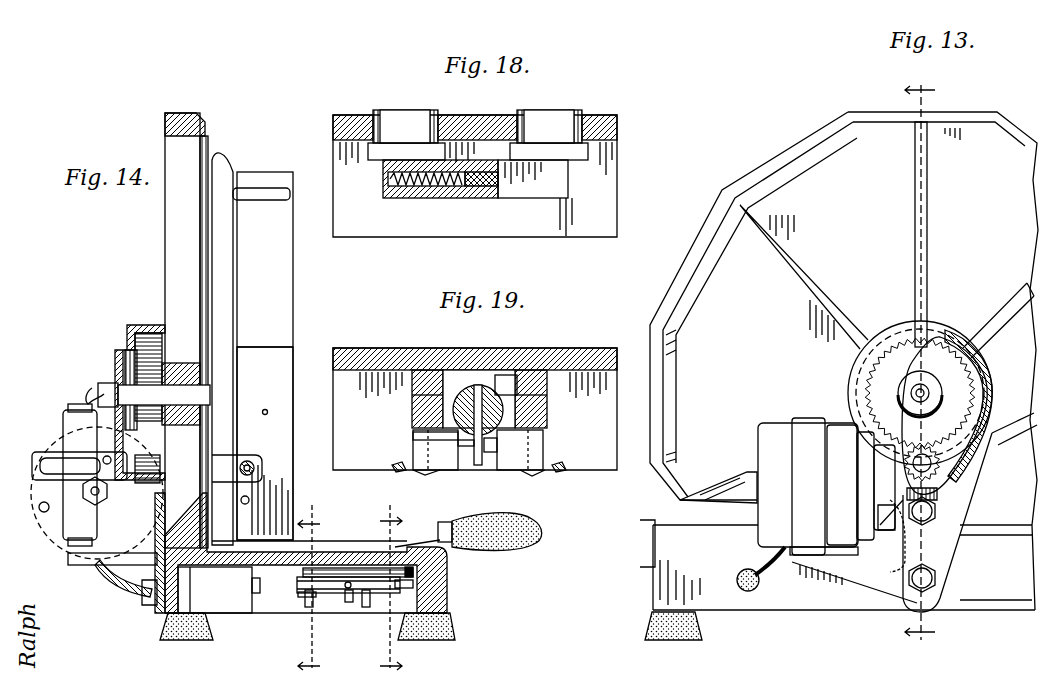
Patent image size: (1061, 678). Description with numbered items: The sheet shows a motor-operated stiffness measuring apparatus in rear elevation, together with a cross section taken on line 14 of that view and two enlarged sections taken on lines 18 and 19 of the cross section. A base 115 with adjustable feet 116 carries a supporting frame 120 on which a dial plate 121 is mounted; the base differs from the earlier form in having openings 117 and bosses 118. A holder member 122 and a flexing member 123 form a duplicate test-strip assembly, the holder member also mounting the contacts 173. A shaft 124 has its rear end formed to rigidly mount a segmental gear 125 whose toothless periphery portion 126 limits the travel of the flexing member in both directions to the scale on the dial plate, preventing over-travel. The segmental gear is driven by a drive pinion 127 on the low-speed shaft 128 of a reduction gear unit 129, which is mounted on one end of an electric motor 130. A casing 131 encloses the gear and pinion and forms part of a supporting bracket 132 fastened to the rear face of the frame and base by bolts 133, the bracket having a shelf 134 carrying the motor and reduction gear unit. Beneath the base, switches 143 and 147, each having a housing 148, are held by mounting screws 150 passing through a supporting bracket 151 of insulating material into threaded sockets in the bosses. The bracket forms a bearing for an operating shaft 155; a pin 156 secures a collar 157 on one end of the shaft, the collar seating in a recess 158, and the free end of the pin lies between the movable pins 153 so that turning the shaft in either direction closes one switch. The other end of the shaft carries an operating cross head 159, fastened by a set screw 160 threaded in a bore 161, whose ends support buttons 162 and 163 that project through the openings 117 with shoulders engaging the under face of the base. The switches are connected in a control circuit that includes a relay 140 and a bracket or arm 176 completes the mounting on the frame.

In FIG. 13, the section line 14- 14 is at (931, 362).
In FIG. 14, the section line 18- 18 is at (391, 590).
In FIG. 14, the section line 19- 19 is at (310, 588).
In FIG. 14, the base 115 is at (325, 552).
In FIG. 19, the base 115 is at (383, 348).
In FIG. 18, the base 115 is at (618, 131).
In FIG. 14, the adjustable feet 116 is at (200, 640).
In FIG. 13, the adjustable feet 116 is at (703, 626).
In FIG. 18, the openings 117 is at (376, 126).
In FIG. 14, the bosses 118 is at (360, 560).
In FIG. 19, the bosses 118 is at (520, 372).
In FIG. 14, the supporting frame 120 is at (158, 120).
In FIG. 13, the supporting frame 120 is at (749, 170).
In FIG. 14, the dial plate 121 is at (210, 138).
In FIG. 13, the dial plate 121 is at (812, 160).
In FIG. 14, the holder member 122 is at (294, 448).
In FIG. 14, the flexing member 123 is at (228, 244).
In FIG. 14, the shaft 124 is at (186, 390).
In FIG. 13, the shaft 124 is at (945, 393).
In FIG. 14, the segmental gear 125 is at (128, 390).
In FIG. 13, the segmental gear 125 is at (950, 340).
In FIG. 14, the toothless periphery portion 126 is at (155, 340).
In FIG. 13, the toothless periphery portion 126 is at (975, 356).
In FIG. 14, the drive pinion 127 is at (160, 463).
In FIG. 13, the drive pinion 127 is at (945, 490).
In FIG. 14, the shaft 128 is at (98, 505).
In FIG. 13, the shaft 128 is at (940, 463).
In FIG. 14, the reduction gear unit 129 is at (70, 448).
In FIG. 13, the reduction gear unit 129 is at (898, 560).
In FIG. 14, the electric motor 130 is at (52, 520).
In FIG. 13, the electric motor 130 is at (830, 428).
In FIG. 14, the casing 131 is at (127, 330).
In FIG. 13, the casing 131 is at (893, 322).
In FIG. 14, the supporting bracket 132 is at (158, 606).
In FIG. 13, the supporting bracket 132 is at (945, 565).
In FIG. 14, the bolts 133 is at (150, 598).
In FIG. 13, the bolts 133 is at (926, 520).
In FIG. 14, the shelf 134 is at (80, 566).
In FIG. 13, the shelf 134 is at (830, 572).
In FIG. 14, the relay 140 is at (240, 600).
In FIG. 19, the switch 143 is at (418, 476).
In FIG. 14, the switch 147 is at (366, 607).
In FIG. 19, the switch 147 is at (548, 474).
In FIG. 14, the housing 148 is at (304, 610).
In FIG. 19, the housing 148 is at (405, 466).
In FIG. 19, the mounting screws 150 is at (440, 472).
In FIG. 14, the supporting bracket 151 is at (355, 605).
In FIG. 19, the movable pin 153 is at (500, 443).
In FIG. 14, the operating shaft 155 is at (350, 582).
In FIG. 19, the operating shaft 155 is at (535, 442).
In FIG. 18, the operating shaft 155 is at (490, 190).
In FIG. 14, the pin 156 is at (310, 607).
In FIG. 19, the pin 156 is at (480, 466).
In FIG. 14, the collar 157 is at (303, 572).
In FIG. 19, the collar 157 is at (520, 386).
In FIG. 19, the recess 158 is at (412, 425).
In FIG. 14, the operating cross head 159 is at (413, 588).
In FIG. 18, the operating cross head 159 is at (545, 196).
In FIG. 18, the set screw 160 is at (458, 198).
In FIG. 18, the bore 161 is at (405, 198).
In FIG. 18, the button 162 is at (586, 155).
In FIG. 14, the button 163 is at (413, 572).
In FIG. 18, the button 163 is at (368, 155).
In FIG. 14, the contacts 173 is at (250, 496).
In FIG. 14, the bracket 176 is at (246, 460).